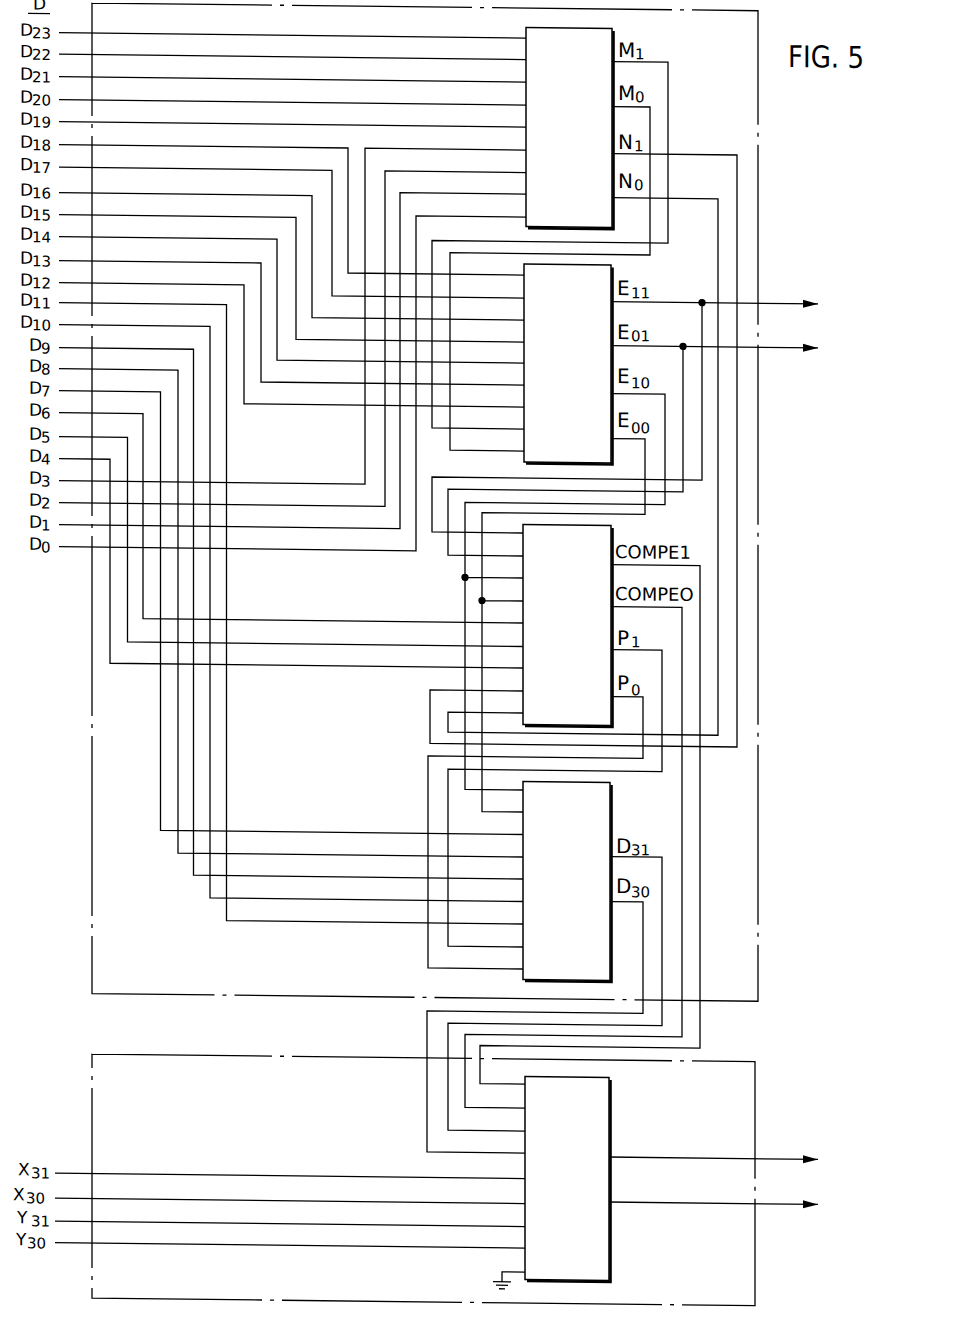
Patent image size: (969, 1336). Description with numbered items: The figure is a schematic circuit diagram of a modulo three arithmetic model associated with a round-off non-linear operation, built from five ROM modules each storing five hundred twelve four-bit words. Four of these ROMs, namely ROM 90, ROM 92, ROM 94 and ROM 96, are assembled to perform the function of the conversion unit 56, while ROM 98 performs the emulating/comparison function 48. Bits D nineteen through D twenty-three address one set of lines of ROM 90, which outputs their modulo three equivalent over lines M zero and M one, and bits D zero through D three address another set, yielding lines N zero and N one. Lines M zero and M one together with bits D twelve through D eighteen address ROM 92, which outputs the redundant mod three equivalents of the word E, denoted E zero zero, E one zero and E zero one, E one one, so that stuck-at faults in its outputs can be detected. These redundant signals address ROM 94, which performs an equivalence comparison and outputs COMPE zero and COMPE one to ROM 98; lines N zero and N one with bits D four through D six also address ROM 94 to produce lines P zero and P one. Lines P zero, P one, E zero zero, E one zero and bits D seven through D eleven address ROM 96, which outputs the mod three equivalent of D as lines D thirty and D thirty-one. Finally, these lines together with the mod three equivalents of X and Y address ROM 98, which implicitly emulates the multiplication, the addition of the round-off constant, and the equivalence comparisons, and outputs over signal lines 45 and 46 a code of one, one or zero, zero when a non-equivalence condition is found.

The ROM module 90 is at (556, 144).
The ROM module 92 is at (555, 378).
The ROM 94 is at (555, 642).
The ROM 96 is at (555, 890).
The ROM 98 is at (555, 1192).
The conversion unit 56 is at (371, 971).
The emulating/comparison function 48 is at (373, 1081).
The signal line 46 is at (796, 1149).
The signal line 45 is at (796, 1194).